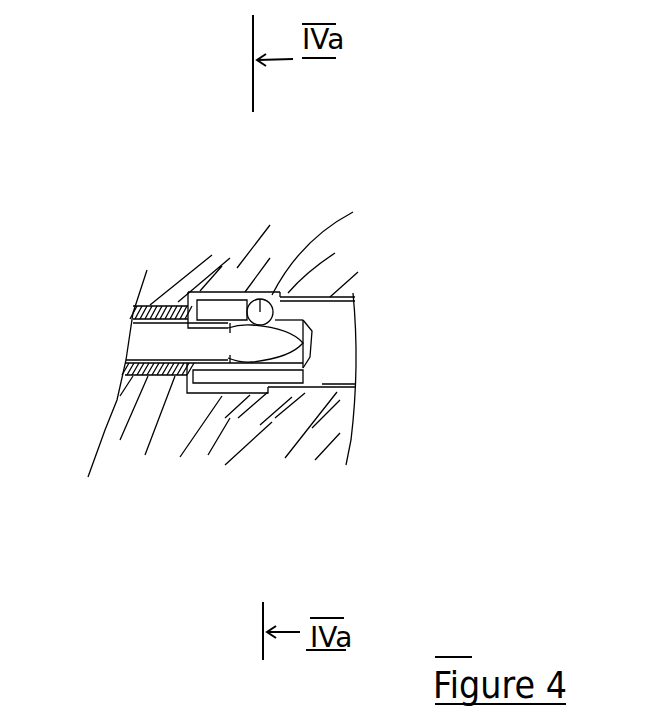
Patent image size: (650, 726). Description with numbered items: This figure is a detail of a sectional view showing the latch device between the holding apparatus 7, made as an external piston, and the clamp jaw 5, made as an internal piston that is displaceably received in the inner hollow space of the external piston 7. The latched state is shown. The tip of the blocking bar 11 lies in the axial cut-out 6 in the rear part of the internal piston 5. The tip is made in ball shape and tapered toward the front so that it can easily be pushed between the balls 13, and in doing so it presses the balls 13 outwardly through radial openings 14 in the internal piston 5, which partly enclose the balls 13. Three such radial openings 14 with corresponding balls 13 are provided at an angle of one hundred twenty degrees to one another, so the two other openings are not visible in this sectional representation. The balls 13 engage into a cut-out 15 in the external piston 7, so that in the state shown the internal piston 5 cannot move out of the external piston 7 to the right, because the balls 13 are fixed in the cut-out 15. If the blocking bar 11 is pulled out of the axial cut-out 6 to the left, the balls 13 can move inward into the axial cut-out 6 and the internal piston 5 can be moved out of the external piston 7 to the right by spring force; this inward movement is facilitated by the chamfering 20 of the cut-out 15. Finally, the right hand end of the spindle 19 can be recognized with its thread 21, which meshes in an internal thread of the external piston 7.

The clamp jaw 5 is at (333, 363).
The axial cut-out 6 is at (307, 387).
The holding apparatus 7 is at (170, 407).
The blocking bar 11 is at (106, 428).
The balls 13 is at (353, 295).
The radial openings 14 is at (250, 295).
The cut-out 15 is at (252, 393).
The spindle 19 is at (133, 305).
The chamfering 20 is at (273, 392).
The thread 21 is at (162, 305).